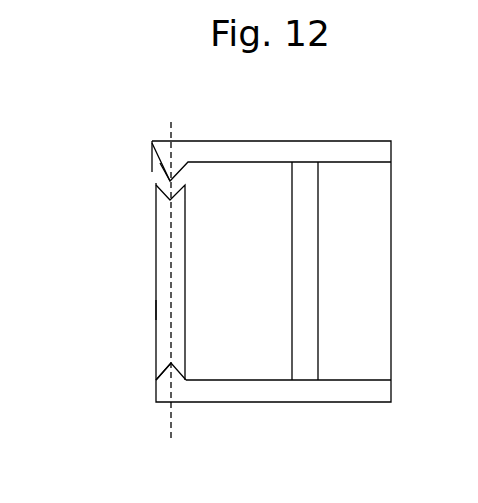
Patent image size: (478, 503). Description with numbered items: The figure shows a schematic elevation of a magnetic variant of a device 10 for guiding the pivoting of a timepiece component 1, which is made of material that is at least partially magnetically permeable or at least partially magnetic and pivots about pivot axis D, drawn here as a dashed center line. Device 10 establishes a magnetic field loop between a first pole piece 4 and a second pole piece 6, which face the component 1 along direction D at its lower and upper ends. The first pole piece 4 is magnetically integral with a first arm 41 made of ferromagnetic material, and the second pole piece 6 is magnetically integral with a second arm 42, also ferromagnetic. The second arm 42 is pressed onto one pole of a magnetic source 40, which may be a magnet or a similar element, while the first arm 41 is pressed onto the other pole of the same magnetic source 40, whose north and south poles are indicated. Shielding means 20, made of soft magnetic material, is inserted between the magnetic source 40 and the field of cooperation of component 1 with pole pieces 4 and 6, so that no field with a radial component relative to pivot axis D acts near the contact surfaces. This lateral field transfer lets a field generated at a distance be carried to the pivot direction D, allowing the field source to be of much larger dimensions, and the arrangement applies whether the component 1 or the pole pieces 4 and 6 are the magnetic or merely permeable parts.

The timepiece component 1 is at (155, 250).
The first pole piece 4 is at (157, 378).
The second pole piece 6 is at (155, 160).
The device 10 is at (118, 297).
The shielding means 20 is at (303, 183).
The magnetic source 40 is at (372, 296).
The first arm 41 is at (338, 390).
The second arm 42 is at (255, 153).
The pivot axis D is at (173, 424).